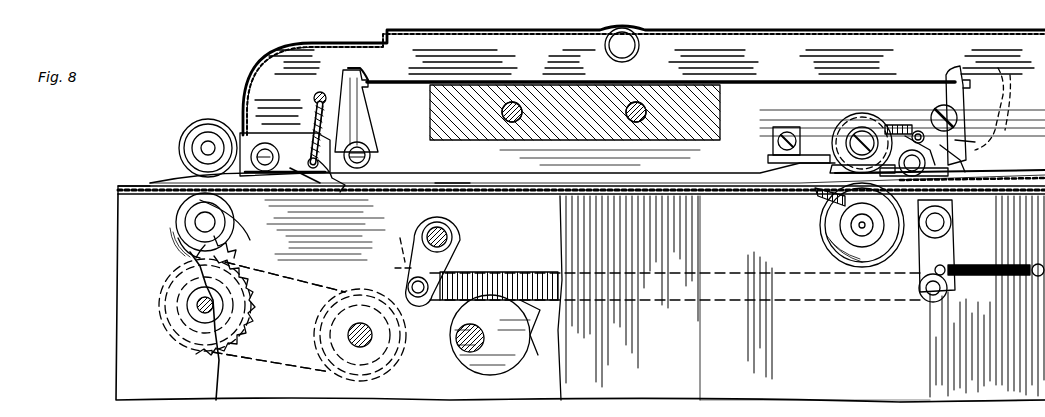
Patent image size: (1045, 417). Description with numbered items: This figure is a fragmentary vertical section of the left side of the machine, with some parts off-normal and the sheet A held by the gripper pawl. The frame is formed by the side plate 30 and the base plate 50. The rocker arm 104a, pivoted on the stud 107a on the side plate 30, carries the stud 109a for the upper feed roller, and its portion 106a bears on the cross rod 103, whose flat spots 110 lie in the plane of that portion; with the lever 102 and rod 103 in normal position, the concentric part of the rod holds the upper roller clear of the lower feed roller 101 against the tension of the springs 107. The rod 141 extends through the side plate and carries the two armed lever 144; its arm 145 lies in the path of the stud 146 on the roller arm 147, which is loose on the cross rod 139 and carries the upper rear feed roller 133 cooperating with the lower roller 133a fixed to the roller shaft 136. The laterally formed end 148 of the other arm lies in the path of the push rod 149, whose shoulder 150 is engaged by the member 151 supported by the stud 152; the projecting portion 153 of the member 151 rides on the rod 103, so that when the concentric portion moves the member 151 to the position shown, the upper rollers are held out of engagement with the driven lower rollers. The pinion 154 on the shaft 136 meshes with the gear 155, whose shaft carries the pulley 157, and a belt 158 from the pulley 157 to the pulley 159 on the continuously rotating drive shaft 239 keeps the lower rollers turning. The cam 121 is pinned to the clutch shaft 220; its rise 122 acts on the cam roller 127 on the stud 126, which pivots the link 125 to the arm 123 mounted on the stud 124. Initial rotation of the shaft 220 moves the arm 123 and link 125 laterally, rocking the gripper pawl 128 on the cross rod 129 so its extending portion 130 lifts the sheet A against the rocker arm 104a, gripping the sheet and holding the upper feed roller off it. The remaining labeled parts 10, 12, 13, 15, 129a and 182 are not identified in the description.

The machine frame 10 is at (122, 194).
The sheet A is at (438, 190).
The magnet block 12 is at (720, 118).
The rod 13 is at (988, 262).
The bracket 15 is at (768, 158).
The side plate 30 is at (972, 408).
The base plate 50 is at (815, 355).
The lower feed roller 101 is at (822, 232).
The lever 102 is at (1001, 102).
The cross rod 103 is at (958, 158).
The rocker arm 104a is at (880, 118).
The portion of rocker arm 106a is at (950, 172).
The spring 107 is at (898, 125).
The stud 107a is at (910, 133).
The stud 109a is at (852, 125).
The flat spot 110 is at (948, 178).
The cam 121 is at (490, 335).
The rise of cam 122 is at (542, 330).
The arm 123 is at (452, 256).
The stud 124 is at (447, 236).
The link 125 is at (530, 274).
The stud 126 is at (408, 290).
The cam roller 127 is at (395, 243).
The gripper pawl 128 is at (936, 246).
The cross rod 129 is at (947, 226).
The roller 129a is at (930, 292).
The extending portion of pawl 130 is at (816, 195).
The upper rear feed roller 133 is at (190, 140).
The lower feed roller 133a is at (160, 230).
The roller shaft 136 is at (200, 240).
The cross rod 139 is at (250, 135).
The rod 141 is at (372, 155).
The two armed lever 144 is at (366, 110).
The arm of lever 145 is at (324, 88).
The stud 146 is at (330, 178).
The roller arm 147 is at (290, 152).
The laterally formed end 148 is at (362, 66).
The push rod 149 is at (550, 80).
The shoulder 150 is at (955, 70).
The member 151 is at (946, 78).
The stud 152 is at (992, 112).
The projecting portion 153 is at (977, 138).
The pinion 154 is at (230, 242).
The gear 155 is at (255, 312).
The pulley 157 is at (188, 335).
The belt 158 is at (276, 370).
The pulley 159 is at (337, 357).
The shaft 182 is at (856, 230).
The clutch shaft 220 is at (485, 318).
The drive shaft 239 is at (350, 342).